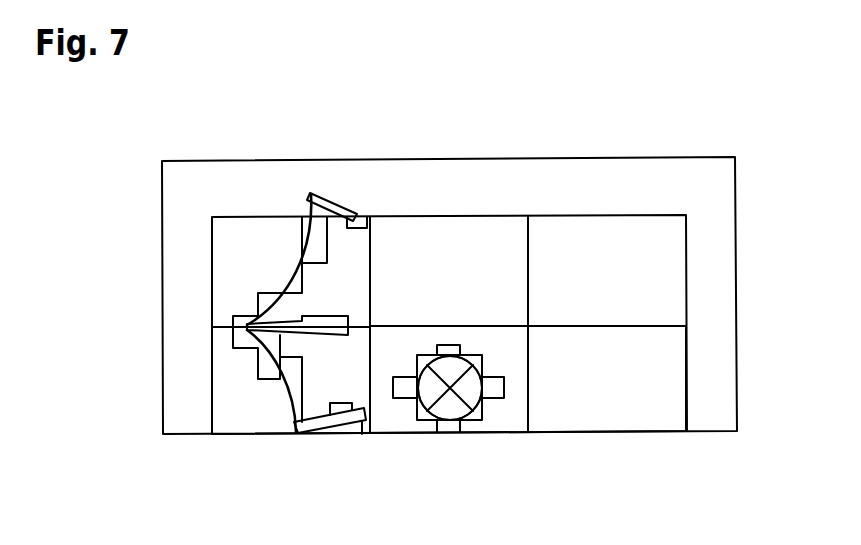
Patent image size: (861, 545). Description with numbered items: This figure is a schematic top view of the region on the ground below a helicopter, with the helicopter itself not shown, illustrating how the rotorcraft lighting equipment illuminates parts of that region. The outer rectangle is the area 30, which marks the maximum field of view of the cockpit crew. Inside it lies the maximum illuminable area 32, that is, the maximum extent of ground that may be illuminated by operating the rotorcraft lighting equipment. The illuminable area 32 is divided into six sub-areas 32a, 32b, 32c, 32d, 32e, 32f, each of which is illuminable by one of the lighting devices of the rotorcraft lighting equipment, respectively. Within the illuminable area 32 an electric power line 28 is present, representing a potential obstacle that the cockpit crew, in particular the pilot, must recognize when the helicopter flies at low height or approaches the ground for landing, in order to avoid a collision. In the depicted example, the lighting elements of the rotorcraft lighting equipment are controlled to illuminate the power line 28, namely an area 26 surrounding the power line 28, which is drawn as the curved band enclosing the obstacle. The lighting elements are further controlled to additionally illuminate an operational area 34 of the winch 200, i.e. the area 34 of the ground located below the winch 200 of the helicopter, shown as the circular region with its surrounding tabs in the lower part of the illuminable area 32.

The area 30 is at (742, 133).
The maximum illuminable area 32 is at (710, 223).
The sub-area 32a is at (251, 228).
The sub-area 32b is at (467, 232).
The sub-area 32c is at (602, 233).
The sub-area 32d is at (240, 418).
The sub-area 32e is at (513, 412).
The sub-area 32f is at (632, 410).
The area surrounding the power line 26 is at (236, 373).
The electric power line 28 is at (342, 188).
The operational area of the winch 34 is at (495, 343).
The winch 200 is at (422, 437).